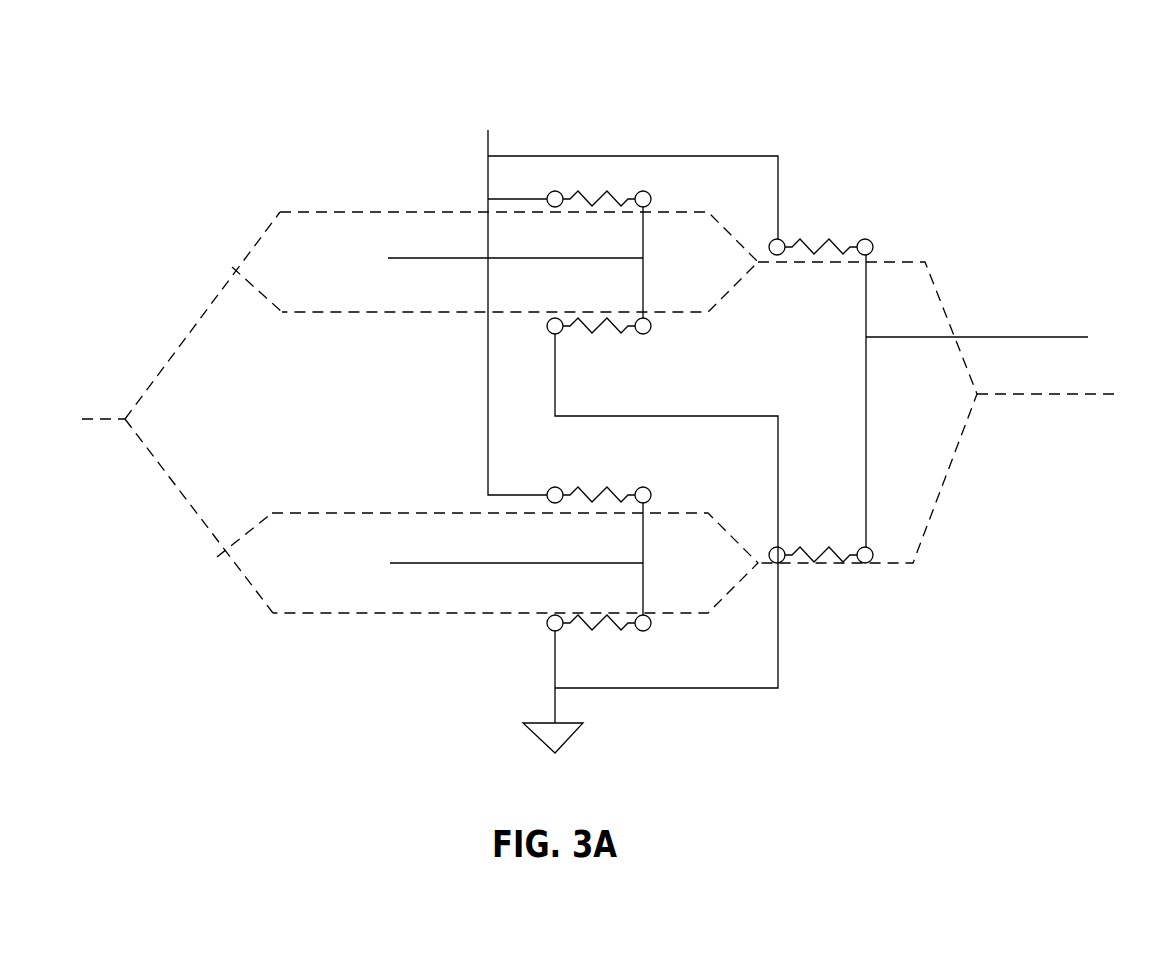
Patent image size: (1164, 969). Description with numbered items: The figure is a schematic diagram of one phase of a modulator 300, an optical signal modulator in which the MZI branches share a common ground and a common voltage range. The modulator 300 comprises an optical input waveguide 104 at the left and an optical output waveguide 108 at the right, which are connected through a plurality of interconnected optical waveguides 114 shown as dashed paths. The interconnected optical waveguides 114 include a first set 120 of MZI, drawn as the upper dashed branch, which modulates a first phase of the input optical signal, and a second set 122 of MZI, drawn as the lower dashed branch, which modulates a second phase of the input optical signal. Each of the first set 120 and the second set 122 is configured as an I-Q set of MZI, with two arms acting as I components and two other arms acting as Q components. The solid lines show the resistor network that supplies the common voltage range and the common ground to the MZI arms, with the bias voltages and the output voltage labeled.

The modulator 300 is at (148, 108).
The optical input waveguide 104 is at (100, 418).
The interconnected optical waveguides 114 is at (150, 455).
The first set of MZI 120 is at (362, 212).
The second set of MZI 122 is at (350, 614).
The optical output waveguide 108 is at (1053, 395).